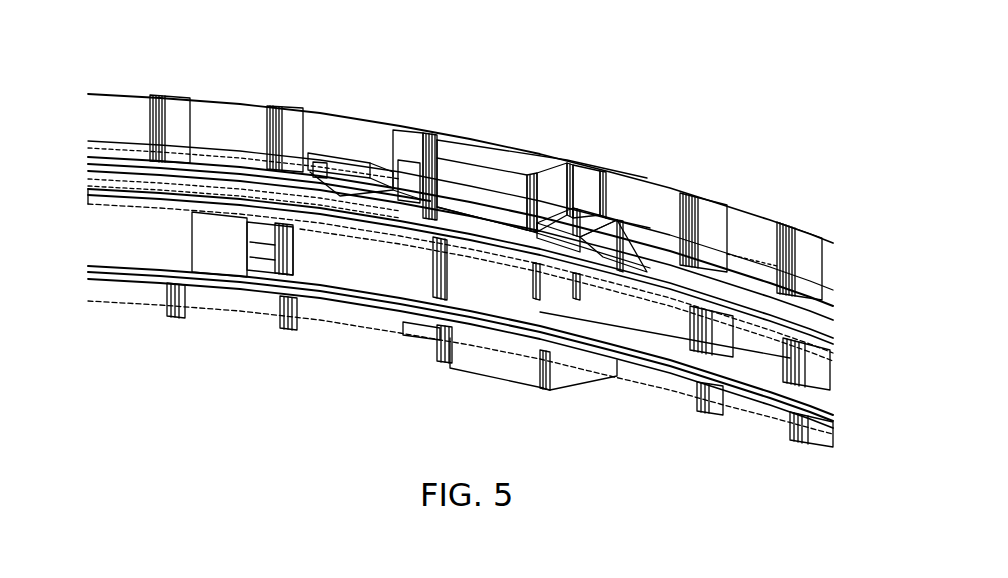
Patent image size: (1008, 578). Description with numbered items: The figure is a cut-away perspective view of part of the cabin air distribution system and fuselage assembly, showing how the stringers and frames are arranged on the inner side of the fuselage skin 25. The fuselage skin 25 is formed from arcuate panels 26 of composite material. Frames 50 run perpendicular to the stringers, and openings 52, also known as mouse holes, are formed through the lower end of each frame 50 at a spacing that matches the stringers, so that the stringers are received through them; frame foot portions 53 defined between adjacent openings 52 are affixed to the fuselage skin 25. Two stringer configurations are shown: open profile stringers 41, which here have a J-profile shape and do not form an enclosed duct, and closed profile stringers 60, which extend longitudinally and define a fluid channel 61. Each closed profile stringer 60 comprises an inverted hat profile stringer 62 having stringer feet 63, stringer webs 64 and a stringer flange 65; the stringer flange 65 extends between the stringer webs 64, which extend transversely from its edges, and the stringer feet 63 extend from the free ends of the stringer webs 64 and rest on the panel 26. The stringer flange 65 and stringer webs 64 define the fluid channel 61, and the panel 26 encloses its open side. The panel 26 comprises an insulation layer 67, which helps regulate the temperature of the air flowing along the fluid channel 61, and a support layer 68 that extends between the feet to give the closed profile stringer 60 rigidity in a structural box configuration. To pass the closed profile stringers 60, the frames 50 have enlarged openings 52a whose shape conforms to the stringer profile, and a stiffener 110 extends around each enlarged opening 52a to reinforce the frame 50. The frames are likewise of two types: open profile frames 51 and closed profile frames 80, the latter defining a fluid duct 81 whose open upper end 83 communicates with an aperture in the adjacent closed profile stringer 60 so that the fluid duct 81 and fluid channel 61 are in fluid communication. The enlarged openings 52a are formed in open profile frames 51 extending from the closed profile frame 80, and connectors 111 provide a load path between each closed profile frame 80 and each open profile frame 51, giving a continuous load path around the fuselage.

The fuselage skin 25 is at (748, 220).
The panel 26 is at (413, 333).
The open profile stringer 41 is at (160, 100).
The frame 50 is at (82, 278).
The open profile frame 51 is at (827, 335).
The opening 52 is at (812, 300).
The enlarged opening 52a is at (437, 270).
The frame foot portion 53 is at (753, 263).
The closed profile stringer 60 is at (521, 251).
The fluid channel 61 is at (493, 160).
The inverted hat profile stringer 62 is at (520, 377).
The stringer foot 63 is at (410, 150).
The stringer web 64 is at (437, 137).
The stringer flange 65 is at (512, 188).
The insulation layer 67 is at (487, 145).
The support layer 68 is at (545, 168).
The closed profile frame 80 is at (120, 243).
The fluid duct 81 is at (235, 272).
The open upper end 83 is at (218, 268).
The stiffener 110 is at (398, 168).
The connector 111 is at (198, 190).